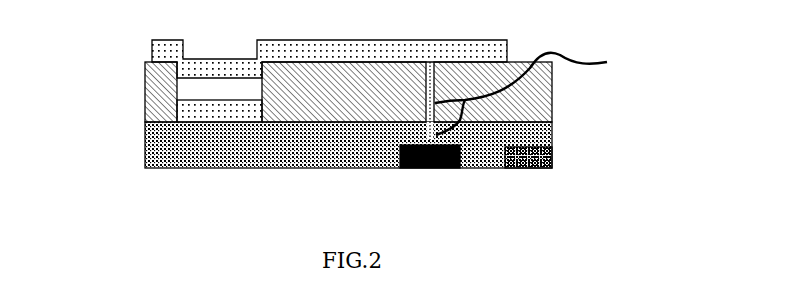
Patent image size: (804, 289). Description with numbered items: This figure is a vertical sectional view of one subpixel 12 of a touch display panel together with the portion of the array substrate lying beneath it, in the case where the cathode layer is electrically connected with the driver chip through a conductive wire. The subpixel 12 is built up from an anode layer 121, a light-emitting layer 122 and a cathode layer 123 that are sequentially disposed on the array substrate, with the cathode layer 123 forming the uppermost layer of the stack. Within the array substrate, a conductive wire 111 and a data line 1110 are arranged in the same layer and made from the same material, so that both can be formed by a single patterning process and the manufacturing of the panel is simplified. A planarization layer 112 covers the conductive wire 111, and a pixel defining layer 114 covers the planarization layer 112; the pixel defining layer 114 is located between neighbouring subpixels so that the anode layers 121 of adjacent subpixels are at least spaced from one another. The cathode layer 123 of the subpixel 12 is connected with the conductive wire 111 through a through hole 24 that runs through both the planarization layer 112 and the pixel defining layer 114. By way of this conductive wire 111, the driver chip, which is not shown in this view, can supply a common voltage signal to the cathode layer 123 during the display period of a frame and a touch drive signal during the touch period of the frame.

The subpixel 12 is at (269, 83).
The anode layer 121 is at (178, 115).
The light-emitting layer 122 is at (183, 88).
The cathode layer 123 is at (152, 46).
The through hole 24 is at (536, 93).
The pixel defining layer 114 is at (553, 83).
The planarization layer 112 is at (553, 127).
The data line 1110 is at (553, 157).
The conductive wire 111 is at (460, 152).